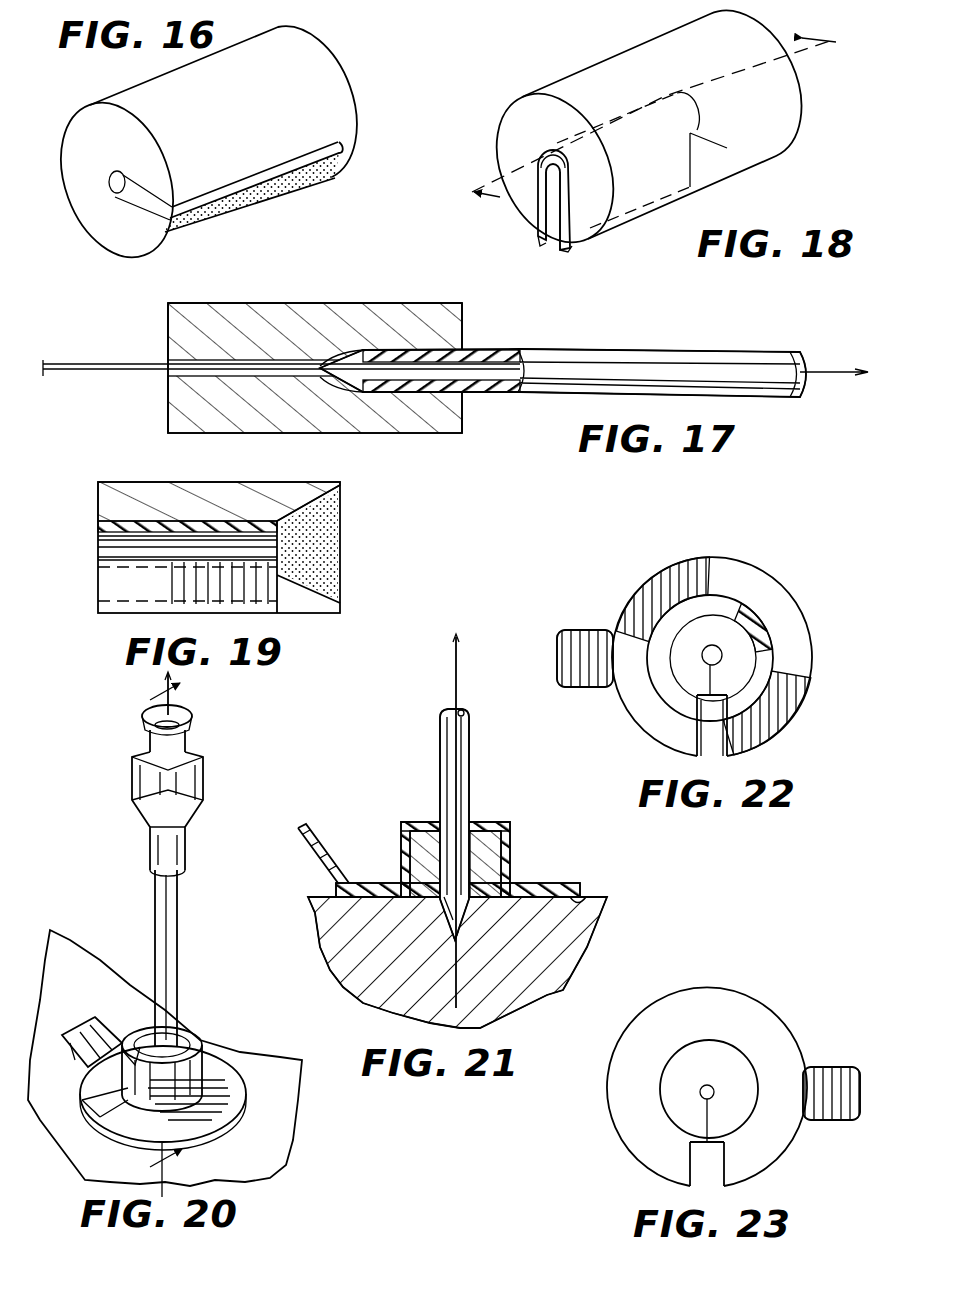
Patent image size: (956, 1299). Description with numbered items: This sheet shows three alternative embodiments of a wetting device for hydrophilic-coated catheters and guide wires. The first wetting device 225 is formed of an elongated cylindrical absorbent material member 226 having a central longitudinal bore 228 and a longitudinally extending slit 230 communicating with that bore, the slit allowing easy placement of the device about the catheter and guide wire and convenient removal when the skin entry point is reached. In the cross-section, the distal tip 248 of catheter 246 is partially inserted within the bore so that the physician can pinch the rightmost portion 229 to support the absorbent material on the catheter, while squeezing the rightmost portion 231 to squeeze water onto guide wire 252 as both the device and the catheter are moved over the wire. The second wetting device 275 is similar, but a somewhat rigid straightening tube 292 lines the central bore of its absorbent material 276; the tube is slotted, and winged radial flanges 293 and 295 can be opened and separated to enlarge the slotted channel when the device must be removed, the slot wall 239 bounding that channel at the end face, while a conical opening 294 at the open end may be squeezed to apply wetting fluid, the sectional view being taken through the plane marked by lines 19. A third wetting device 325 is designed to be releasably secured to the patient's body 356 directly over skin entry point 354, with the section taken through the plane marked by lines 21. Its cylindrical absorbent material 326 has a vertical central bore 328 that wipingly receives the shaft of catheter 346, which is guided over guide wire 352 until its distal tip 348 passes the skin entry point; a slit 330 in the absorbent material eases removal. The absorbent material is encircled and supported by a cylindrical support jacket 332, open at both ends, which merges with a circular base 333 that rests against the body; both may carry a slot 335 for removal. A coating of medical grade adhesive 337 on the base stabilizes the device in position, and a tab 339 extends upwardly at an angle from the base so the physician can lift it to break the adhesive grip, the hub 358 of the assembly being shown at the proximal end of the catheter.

In FIG. 18, the section plane lines 19— 19 is at (540, 34).
In FIG. 20, the section plane lines 21— 21 is at (147, 940).
In FIG. 16, the wetting device 225 is at (227, 150).
In FIG. 17, the wetting device 225 is at (334, 336).
In FIG. 16, the absorbent material member 226 is at (272, 200).
In FIG. 17, the absorbent material member 226 is at (308, 303).
In FIG. 16, the central longitudinal bore 228 is at (112, 197).
In FIG. 16, the rightmost portion 229 is at (312, 53).
In FIG. 17, the rightmost portion 229 is at (442, 303).
In FIG. 16, the longitudinally extending slit 230 is at (338, 135).
In FIG. 16, the rightmost portion 231 is at (118, 103).
In FIG. 17, the rightmost portion 231 is at (222, 303).
In FIG. 18, the slot wall 239 is at (537, 235).
In FIG. 17, the catheter 246 is at (607, 351).
In FIG. 17, the distal tip 248 is at (330, 380).
In FIG. 17, the guide wire 252 is at (95, 360).
In FIG. 18, the wetting device 275 is at (659, 150).
In FIG. 18, the absorbent material 276 is at (650, 33).
In FIG. 19, the absorbent material 276 is at (250, 482).
In FIG. 18, the straightening tube 292 is at (580, 160).
In FIG. 19, the straightening tube 292 is at (163, 522).
In FIG. 19, the winged radial flange 293 is at (108, 605).
In FIG. 19, the conical opening 294 is at (312, 555).
In FIG. 18, the winged radial flange 295 is at (556, 254).
In FIG. 22, the wetting device 325 is at (694, 651).
In FIG. 21, the wetting device 325 is at (469, 833).
In FIG. 20, the wetting device 325 is at (173, 1072).
In FIG. 23, the wetting device 325 is at (702, 1062).
In FIG. 22, the absorbent material 326 is at (710, 596).
In FIG. 21, the absorbent material 326 is at (464, 854).
In FIG. 20, the absorbent material 326 is at (194, 1048).
In FIG. 23, the absorbent material 326 is at (742, 1068).
In FIG. 22, the vertical central bore 328 is at (705, 662).
In FIG. 23, the vertical central bore 328 is at (703, 1098).
In FIG. 22, the slit 330 is at (730, 755).
In FIG. 23, the slit 330 is at (727, 1180).
In FIG. 21, the cylindrical support jacket 332 is at (511, 838).
In FIG. 20, the cylindrical support jacket 332 is at (215, 1068).
In FIG. 21, the circular base 333 is at (550, 883).
In FIG. 20, the circular base 333 is at (220, 1105).
In FIG. 23, the circular base 333 is at (690, 988).
In FIG. 22, the slot 335 is at (694, 752).
In FIG. 20, the slot 335 is at (108, 1117).
In FIG. 23, the slot 335 is at (687, 1180).
In FIG. 21, the medical grade adhesive 337 is at (575, 897).
In FIG. 20, the medical grade adhesive 337 is at (240, 1102).
In FIG. 23, the medical grade adhesive 337 is at (612, 1100).
In FIG. 22, the tab 339 is at (590, 628).
In FIG. 21, the tab 339 is at (322, 799).
In FIG. 20, the tab 339 is at (95, 1018).
In FIG. 23, the tab 339 is at (850, 1066).
In FIG. 21, the catheter 346 is at (439, 788).
In FIG. 20, the catheter 346 is at (178, 915).
In FIG. 21, the distal tip 348 is at (466, 938).
In FIG. 21, the guide wire 352 is at (458, 672).
In FIG. 20, the guide wire 352 is at (178, 690).
In FIG. 21, the skin entry point 354 is at (466, 905).
In FIG. 21, the patient's body 356 is at (405, 957).
In FIG. 20, the patient's body 356 is at (207, 1018).
In FIG. 20, the needle hub 358 is at (203, 785).